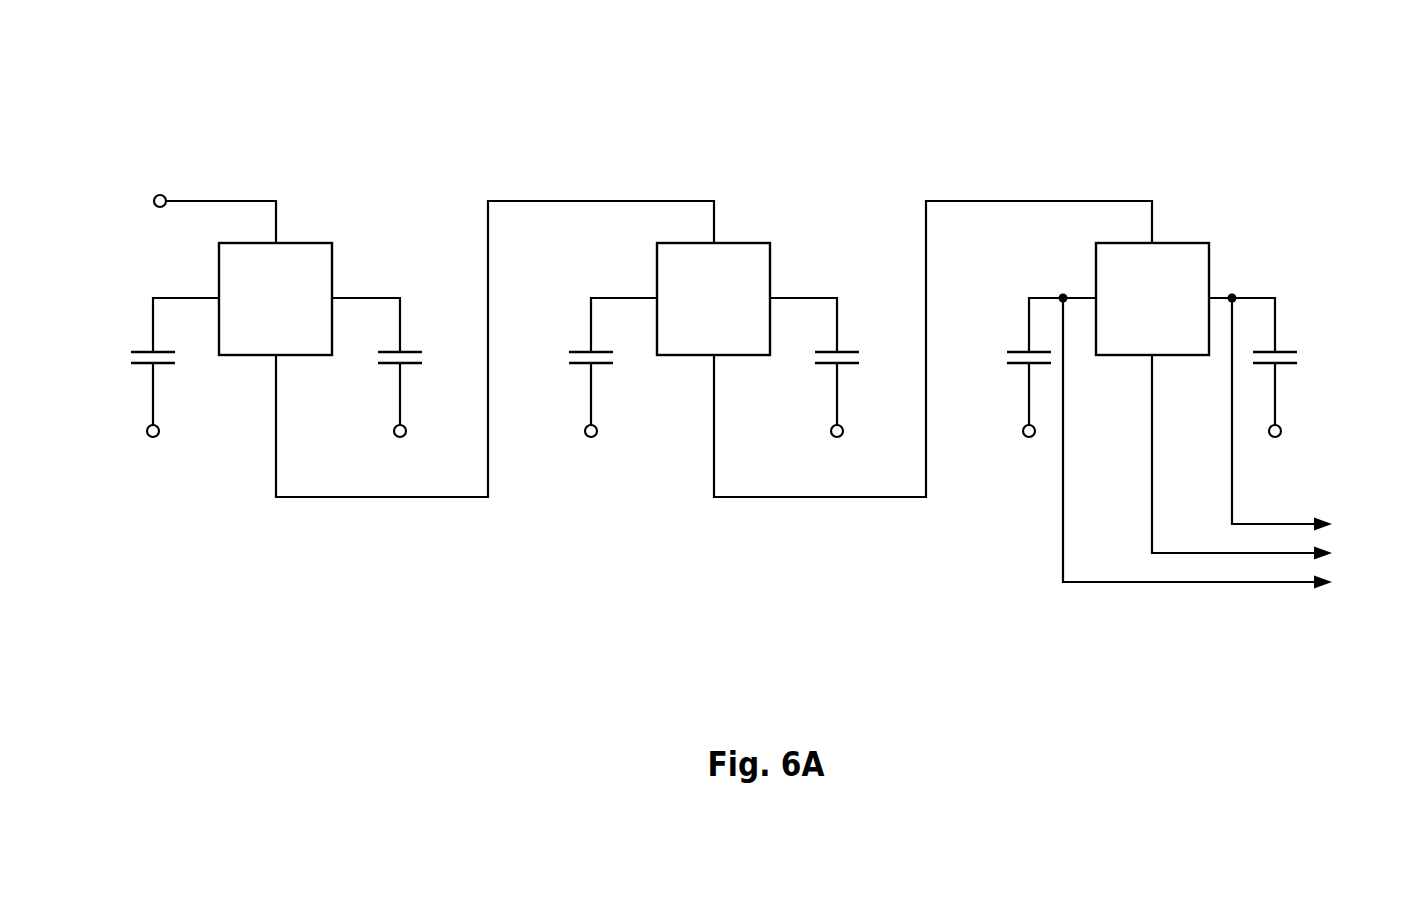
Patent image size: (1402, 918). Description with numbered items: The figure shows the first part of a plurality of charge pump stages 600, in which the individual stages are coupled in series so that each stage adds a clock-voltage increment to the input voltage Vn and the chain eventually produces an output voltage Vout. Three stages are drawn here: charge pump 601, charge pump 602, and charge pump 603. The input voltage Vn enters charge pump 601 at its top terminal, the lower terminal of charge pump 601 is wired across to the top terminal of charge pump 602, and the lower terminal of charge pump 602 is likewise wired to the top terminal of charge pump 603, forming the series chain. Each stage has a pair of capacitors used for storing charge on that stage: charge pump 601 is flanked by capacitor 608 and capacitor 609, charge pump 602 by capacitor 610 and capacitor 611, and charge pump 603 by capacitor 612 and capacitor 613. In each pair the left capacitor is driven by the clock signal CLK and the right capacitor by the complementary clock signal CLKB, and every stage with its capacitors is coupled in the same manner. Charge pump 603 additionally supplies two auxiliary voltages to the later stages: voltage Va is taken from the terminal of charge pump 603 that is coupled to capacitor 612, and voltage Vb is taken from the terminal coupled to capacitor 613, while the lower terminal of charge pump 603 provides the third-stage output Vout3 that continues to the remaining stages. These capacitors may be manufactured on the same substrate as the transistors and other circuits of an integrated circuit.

The plurality of charge pump stages 600 is at (769, 47).
The charge pump 601 is at (314, 243).
The charge pump 602 is at (753, 243).
The charge pump 603 is at (1190, 243).
The capacitor 608 is at (143, 366).
The capacitor 609 is at (388, 366).
The capacitor 610 is at (580, 366).
The capacitor 611 is at (827, 366).
The capacitor 612 is at (1017, 366).
The capacitor 613 is at (1287, 366).